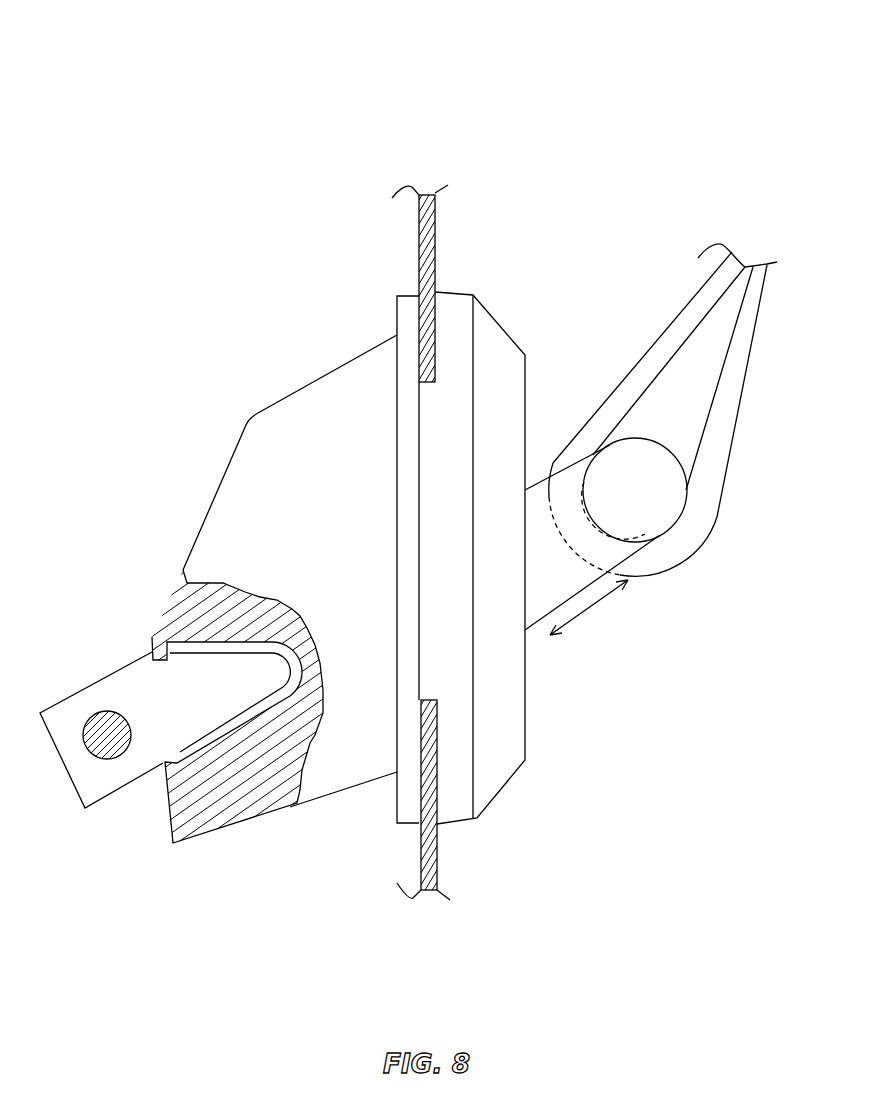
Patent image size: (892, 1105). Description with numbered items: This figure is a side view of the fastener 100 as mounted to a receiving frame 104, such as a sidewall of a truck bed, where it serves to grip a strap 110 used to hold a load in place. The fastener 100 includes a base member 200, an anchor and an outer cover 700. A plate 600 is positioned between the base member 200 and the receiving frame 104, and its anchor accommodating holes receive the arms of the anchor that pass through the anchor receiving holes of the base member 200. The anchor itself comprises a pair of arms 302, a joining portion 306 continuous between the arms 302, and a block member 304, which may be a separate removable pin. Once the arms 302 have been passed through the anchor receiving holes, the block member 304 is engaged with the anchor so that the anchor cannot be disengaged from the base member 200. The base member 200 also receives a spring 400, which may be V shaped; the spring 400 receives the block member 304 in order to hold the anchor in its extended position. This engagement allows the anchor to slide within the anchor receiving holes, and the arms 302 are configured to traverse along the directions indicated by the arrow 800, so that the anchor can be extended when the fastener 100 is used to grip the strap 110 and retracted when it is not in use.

The fastener 100 is at (613, 84).
The frame 104 is at (430, 247).
The strap 110 is at (755, 325).
The base member 200 is at (302, 382).
The arm 302 is at (108, 672).
The block member 304 is at (107, 757).
The joining portion 306 is at (663, 450).
The spring 400 is at (275, 640).
The plate 600 is at (400, 292).
The outer cover 700 is at (505, 335).
The arrow 800 is at (616, 613).